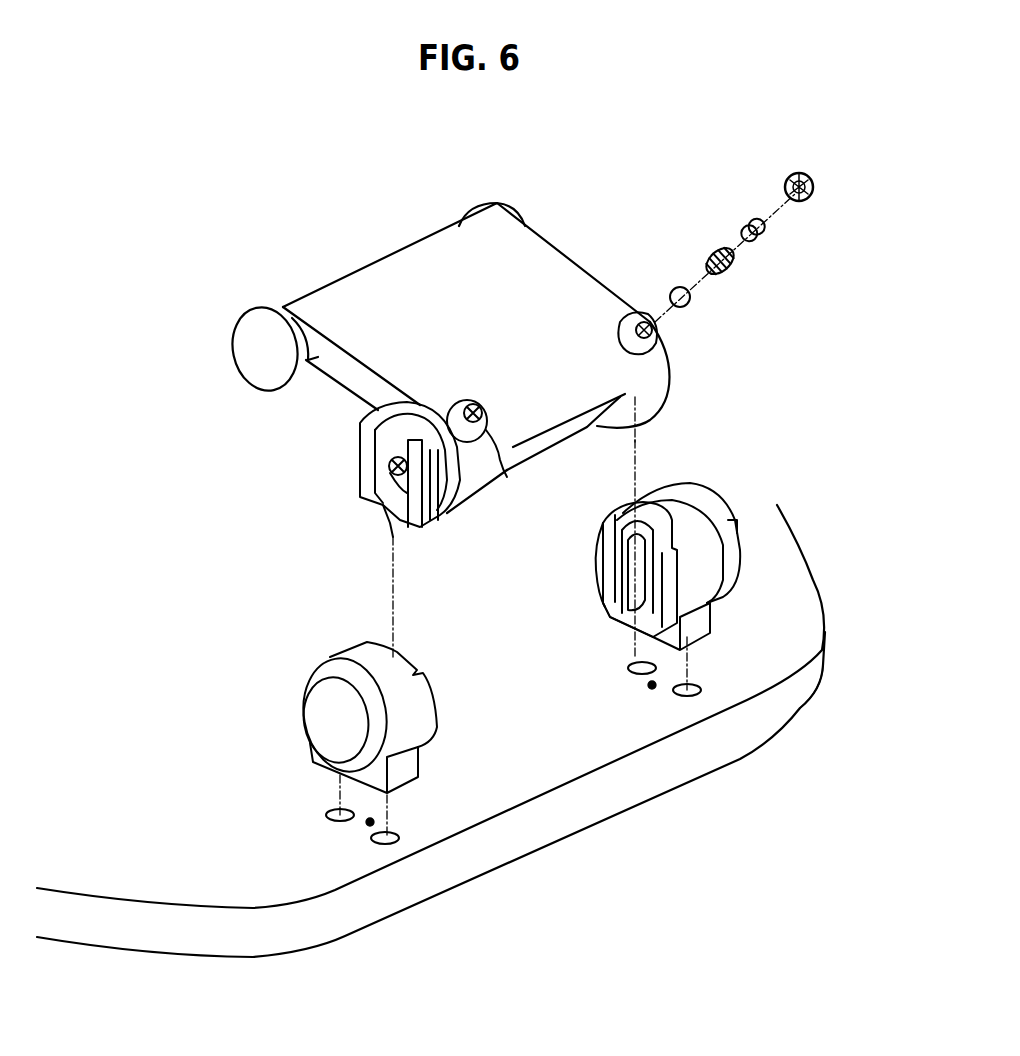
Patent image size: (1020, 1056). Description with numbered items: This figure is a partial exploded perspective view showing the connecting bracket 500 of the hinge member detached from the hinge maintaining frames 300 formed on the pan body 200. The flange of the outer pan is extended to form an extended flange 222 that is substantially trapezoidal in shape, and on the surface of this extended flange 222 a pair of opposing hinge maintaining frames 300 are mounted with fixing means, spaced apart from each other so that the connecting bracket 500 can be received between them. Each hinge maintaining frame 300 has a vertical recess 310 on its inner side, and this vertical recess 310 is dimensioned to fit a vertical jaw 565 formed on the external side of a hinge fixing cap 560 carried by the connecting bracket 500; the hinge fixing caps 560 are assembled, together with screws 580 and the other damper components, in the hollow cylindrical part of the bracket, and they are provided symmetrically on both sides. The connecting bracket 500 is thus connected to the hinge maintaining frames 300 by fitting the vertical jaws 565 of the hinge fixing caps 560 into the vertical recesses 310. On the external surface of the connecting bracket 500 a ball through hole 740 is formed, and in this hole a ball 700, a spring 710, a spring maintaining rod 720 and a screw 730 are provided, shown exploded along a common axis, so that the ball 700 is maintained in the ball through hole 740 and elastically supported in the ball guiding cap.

The base plate 200 is at (808, 548).
The extended flange 222 is at (557, 750).
The hinge maintaining frame 300 is at (720, 478).
The vertical recess 310 is at (627, 621).
The connecting bracket 500 is at (492, 325).
The hinge fixing cap 560 is at (355, 477).
The vertical jaw 565 is at (437, 495).
The screw 580 is at (397, 520).
The ball 700 is at (678, 288).
The spring 710 is at (715, 255).
The spring maintaining rod 720 is at (745, 227).
The screw 730 is at (488, 437).
The ball through hole 740 is at (660, 327).